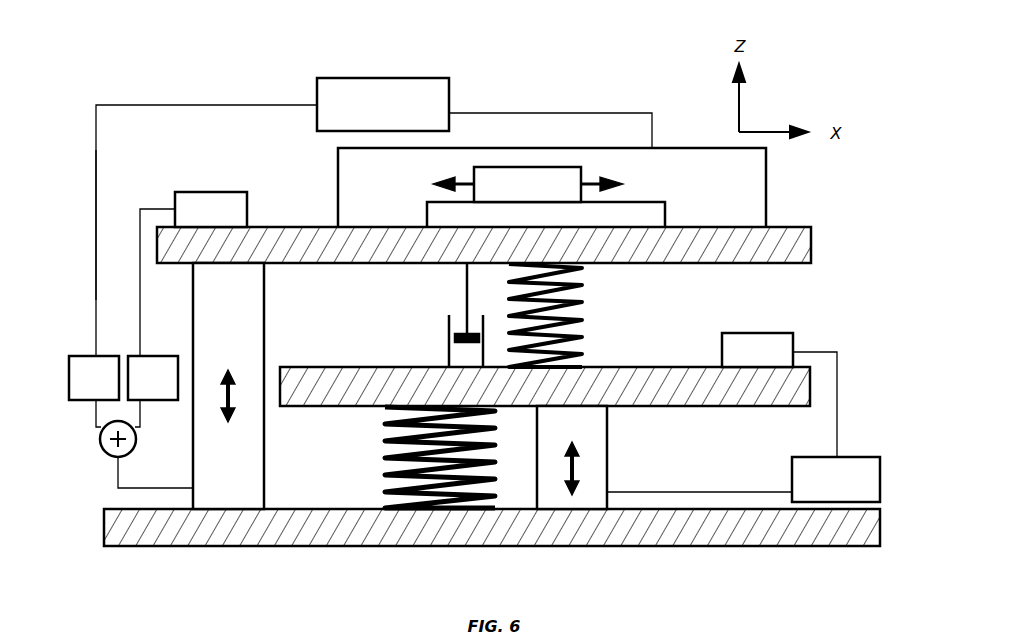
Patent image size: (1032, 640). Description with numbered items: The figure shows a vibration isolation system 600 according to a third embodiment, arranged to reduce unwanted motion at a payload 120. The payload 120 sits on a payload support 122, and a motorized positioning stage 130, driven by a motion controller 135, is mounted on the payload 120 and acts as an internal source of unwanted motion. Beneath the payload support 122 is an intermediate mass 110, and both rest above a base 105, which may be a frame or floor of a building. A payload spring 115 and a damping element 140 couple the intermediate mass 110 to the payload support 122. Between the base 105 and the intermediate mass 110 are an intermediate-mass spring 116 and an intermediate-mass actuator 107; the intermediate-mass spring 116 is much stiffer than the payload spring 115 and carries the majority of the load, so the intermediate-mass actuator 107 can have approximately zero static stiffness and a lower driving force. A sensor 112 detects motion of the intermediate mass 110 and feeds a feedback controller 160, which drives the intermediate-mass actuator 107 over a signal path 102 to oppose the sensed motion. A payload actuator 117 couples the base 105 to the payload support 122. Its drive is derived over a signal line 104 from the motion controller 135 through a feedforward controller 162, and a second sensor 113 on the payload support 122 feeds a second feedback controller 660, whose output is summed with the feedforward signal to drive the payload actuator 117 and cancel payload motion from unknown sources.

The vibration isolation system 600 is at (654, 42).
The signal line to controller 102 is at (838, 384).
The signal line from controller 104 is at (96, 217).
The base 105 is at (335, 509).
The intermediate-mass actuator 107 is at (559, 433).
The intermediate mass 110 is at (395, 367).
The sensor 112 is at (742, 360).
The second sensor 113 is at (196, 219).
The payload spring 115 is at (582, 318).
The intermediate-mass spring 116 is at (385, 457).
The payload actuator 117 is at (215, 293).
The payload 120 is at (357, 193).
The payload support 122 is at (294, 226).
The positioning stage 130 is at (513, 194).
The motion controller 135 is at (368, 114).
The damping element 140 is at (448, 325).
The feedback controller 160 is at (821, 490).
The feedforward controller 162 is at (79, 388).
The second feedback controller 660 is at (138, 388).